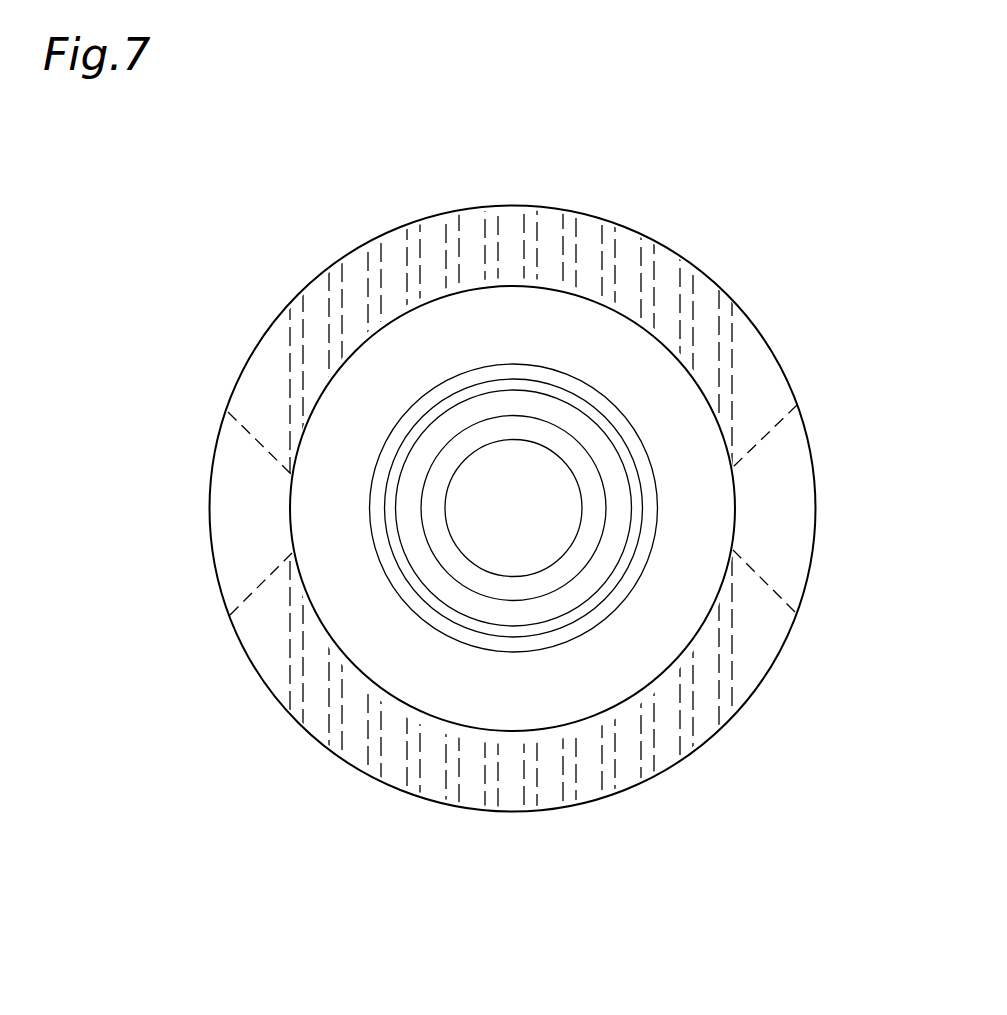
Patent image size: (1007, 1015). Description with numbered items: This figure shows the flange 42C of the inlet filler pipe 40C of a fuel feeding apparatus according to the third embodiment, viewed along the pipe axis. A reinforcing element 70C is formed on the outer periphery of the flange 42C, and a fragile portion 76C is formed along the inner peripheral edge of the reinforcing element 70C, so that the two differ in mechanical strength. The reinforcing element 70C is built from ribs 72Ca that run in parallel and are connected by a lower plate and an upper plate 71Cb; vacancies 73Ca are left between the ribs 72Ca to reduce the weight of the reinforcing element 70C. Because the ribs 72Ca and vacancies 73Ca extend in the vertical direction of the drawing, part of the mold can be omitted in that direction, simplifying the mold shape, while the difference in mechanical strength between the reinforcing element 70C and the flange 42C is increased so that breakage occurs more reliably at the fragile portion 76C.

The inlet filler pipe 40C is at (776, 254).
The flange 42C is at (625, 245).
The reinforcing element 70C is at (753, 662).
The upper plate 71Cb is at (260, 650).
The ribs 72Ca is at (368, 755).
The vacancies 73Ca is at (440, 792).
The fragile portion 76C is at (715, 403).